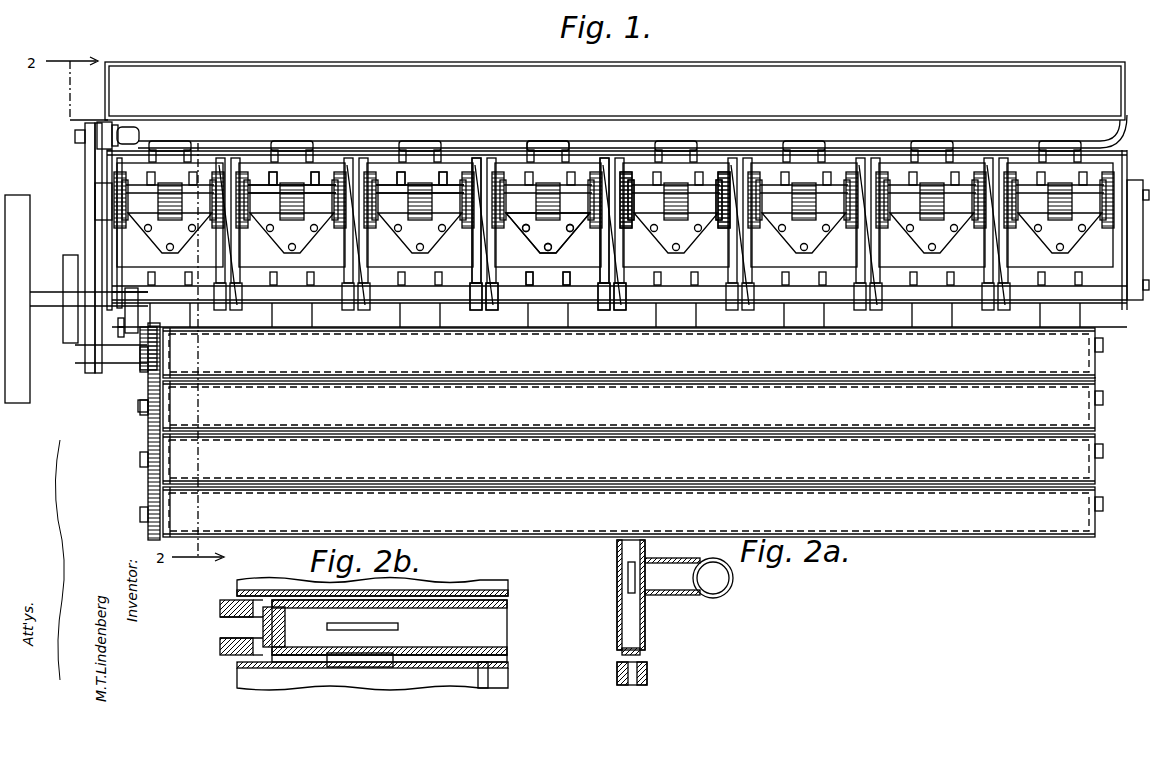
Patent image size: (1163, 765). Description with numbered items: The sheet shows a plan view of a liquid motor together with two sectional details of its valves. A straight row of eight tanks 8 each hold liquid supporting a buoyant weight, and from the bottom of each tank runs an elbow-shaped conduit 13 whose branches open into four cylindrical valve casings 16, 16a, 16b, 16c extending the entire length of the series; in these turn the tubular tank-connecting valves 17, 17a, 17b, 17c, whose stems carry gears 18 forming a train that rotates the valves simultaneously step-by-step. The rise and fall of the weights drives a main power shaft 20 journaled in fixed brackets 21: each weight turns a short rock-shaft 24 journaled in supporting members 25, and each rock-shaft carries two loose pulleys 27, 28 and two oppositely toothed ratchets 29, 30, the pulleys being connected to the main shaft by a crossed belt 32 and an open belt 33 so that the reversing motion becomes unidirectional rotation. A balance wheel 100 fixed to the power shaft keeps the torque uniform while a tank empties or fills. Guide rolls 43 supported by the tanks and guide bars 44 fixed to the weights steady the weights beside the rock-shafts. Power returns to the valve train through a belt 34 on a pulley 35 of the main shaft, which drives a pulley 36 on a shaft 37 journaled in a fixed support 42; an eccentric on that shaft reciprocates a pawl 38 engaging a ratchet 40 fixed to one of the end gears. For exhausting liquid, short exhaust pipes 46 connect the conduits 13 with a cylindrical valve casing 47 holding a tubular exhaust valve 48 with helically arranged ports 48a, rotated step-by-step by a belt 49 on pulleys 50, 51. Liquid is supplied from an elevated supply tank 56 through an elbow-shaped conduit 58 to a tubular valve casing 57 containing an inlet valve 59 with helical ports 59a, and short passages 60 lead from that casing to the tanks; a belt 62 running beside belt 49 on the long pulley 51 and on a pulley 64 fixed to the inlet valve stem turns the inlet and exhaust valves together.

In FIG. 1, the tank 8 is at (210, 155).
In FIG. 2B, the tank 8 is at (246, 676).
In FIG. 1, the conduit 13 is at (290, 313).
In FIG. 2A, the conduit 13 is at (735, 584).
In FIG. 1, the valve casing 16 is at (629, 512).
In FIG. 1, the valve casing 16a is at (629, 459).
In FIG. 1, the valve casing 16b is at (629, 406).
In FIG. 1, the valve casing 16c is at (629, 353).
In FIG. 1, the tank-connecting valve 17 is at (1010, 530).
In FIG. 1, the tank-connecting valve 17a is at (1000, 483).
In FIG. 1, the tank-connecting valve 17b is at (1000, 430).
In FIG. 1, the tank-connecting valve 17c is at (990, 375).
In FIG. 1, the gear 18 is at (162, 360).
In FIG. 1, the main power shaft 20 is at (40, 292).
In FIG. 1, the bracket 21 is at (100, 238).
In FIG. 1, the rock-shaft 24 is at (578, 205).
In FIG. 1, the supporting member 25 is at (358, 180).
In FIG. 1, the loose pulley 27 is at (478, 165).
In FIG. 1, the loose pulley 28 is at (604, 165).
In FIG. 1, the ratchet 29 is at (632, 218).
In FIG. 1, the ratchet 30 is at (720, 180).
In FIG. 1, the crossed belt 32 is at (110, 243).
In FIG. 1, the open belt 33 is at (606, 311).
In FIG. 1, the belt 34 is at (160, 313).
In FIG. 1, the pulley 35 is at (150, 300).
In FIG. 1, the pulley 36 is at (157, 330).
In FIG. 1, the shaft 37 is at (117, 324).
In FIG. 1, the pawl 38 is at (160, 350).
In FIG. 1, the ratchet 40 is at (143, 410).
In FIG. 1, the fixed support 42 is at (120, 338).
In FIG. 1, the guide roll 43 is at (548, 140).
In FIG. 1, the guide bar 44 is at (270, 180).
In FIG. 2A, the exhaust pipe 46 is at (678, 597).
In FIG. 2A, the valve casing 47 is at (645, 652).
In FIG. 2A, the exhaust valve 48 is at (640, 635).
In FIG. 2A, the port 48a is at (630, 580).
In FIG. 1, the belt 49 is at (90, 175).
In FIG. 1, the pulley 50 is at (102, 373).
In FIG. 1, the pulley 51 is at (80, 148).
In FIG. 2A, the pulley 51 is at (648, 677).
In FIG. 1, the supply tank 56 is at (245, 80).
In FIG. 2B, the supply tank 56 is at (499, 588).
In FIG. 1, the valve casing 57 is at (722, 140).
In FIG. 1, the elbow-shaped conduit 58 is at (1115, 125).
In FIG. 2B, the inlet valve 59 is at (288, 610).
In FIG. 2B, the port 59a is at (398, 626).
In FIG. 1, the passage 60 is at (172, 148).
In FIG. 2B, the passage 60 is at (353, 660).
In FIG. 1, the belt 62 is at (104, 122).
In FIG. 1, the pulley 64 is at (118, 128).
In FIG. 2B, the pulley 64 is at (220, 640).
In FIG. 1, the balance wheel 100 is at (17, 403).